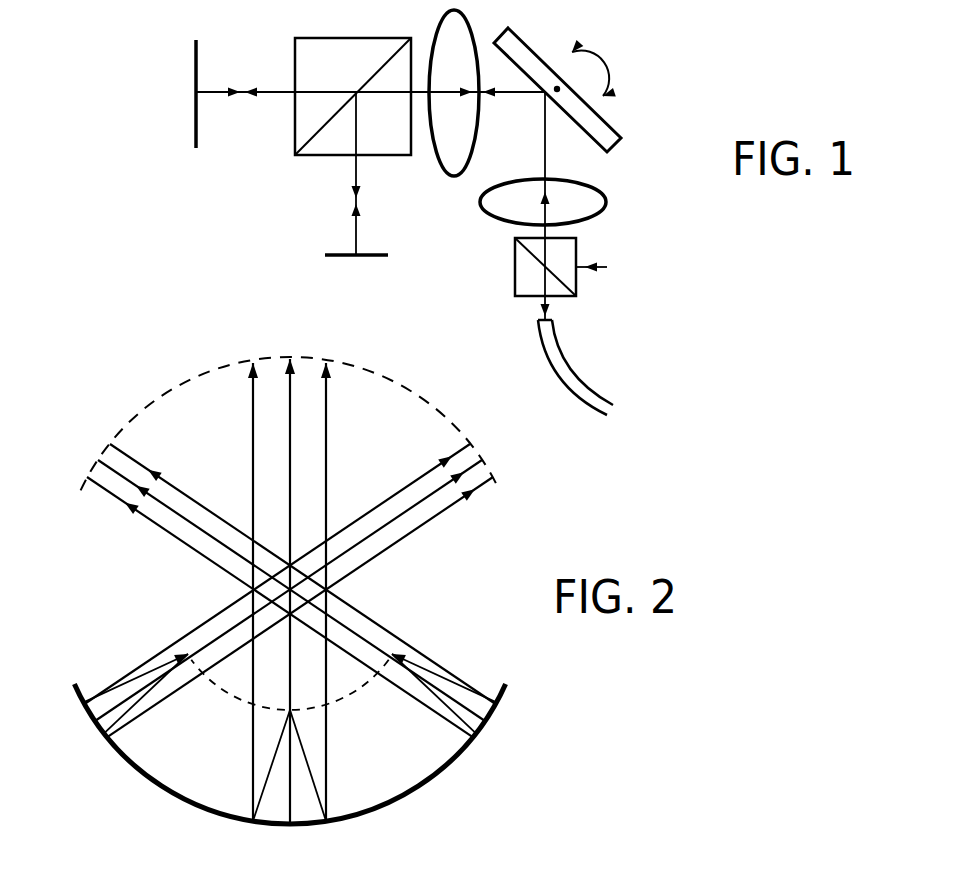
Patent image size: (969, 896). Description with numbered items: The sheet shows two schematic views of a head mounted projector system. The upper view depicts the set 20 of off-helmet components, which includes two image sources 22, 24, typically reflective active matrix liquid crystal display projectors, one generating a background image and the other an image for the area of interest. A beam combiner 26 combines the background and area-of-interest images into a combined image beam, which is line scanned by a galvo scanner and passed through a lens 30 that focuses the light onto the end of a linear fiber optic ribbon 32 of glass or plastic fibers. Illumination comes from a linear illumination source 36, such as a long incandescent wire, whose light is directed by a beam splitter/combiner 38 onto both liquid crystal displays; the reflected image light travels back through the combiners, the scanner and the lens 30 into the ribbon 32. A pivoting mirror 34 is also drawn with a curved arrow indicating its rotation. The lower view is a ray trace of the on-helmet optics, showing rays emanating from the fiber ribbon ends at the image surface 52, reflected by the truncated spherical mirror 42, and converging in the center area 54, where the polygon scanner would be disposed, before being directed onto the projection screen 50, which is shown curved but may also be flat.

In FIG. 1, the set of off-helmet/head components 20 is at (93, 31).
In FIG. 1, the image source 22 is at (193, 57).
In FIG. 1, the image source 24 is at (333, 254).
In FIG. 1, the beam combiner 26 is at (322, 38).
In FIG. 1, the lens 30 is at (604, 211).
In FIG. 1, the fiber optic ribbon 32 is at (548, 359).
In FIG. 1, the rotating mirror 34 is at (520, 33).
In FIG. 1, the illumination source 36 is at (607, 267).
In FIG. 1, the beam splitter/combiner 38 is at (513, 284).
In FIG. 2, the spherical mirror 42 is at (390, 809).
In FIG. 2, the projection screen 50 is at (447, 393).
In FIG. 2, the image surface 52 is at (222, 689).
In FIG. 2, the center area 54 is at (345, 591).